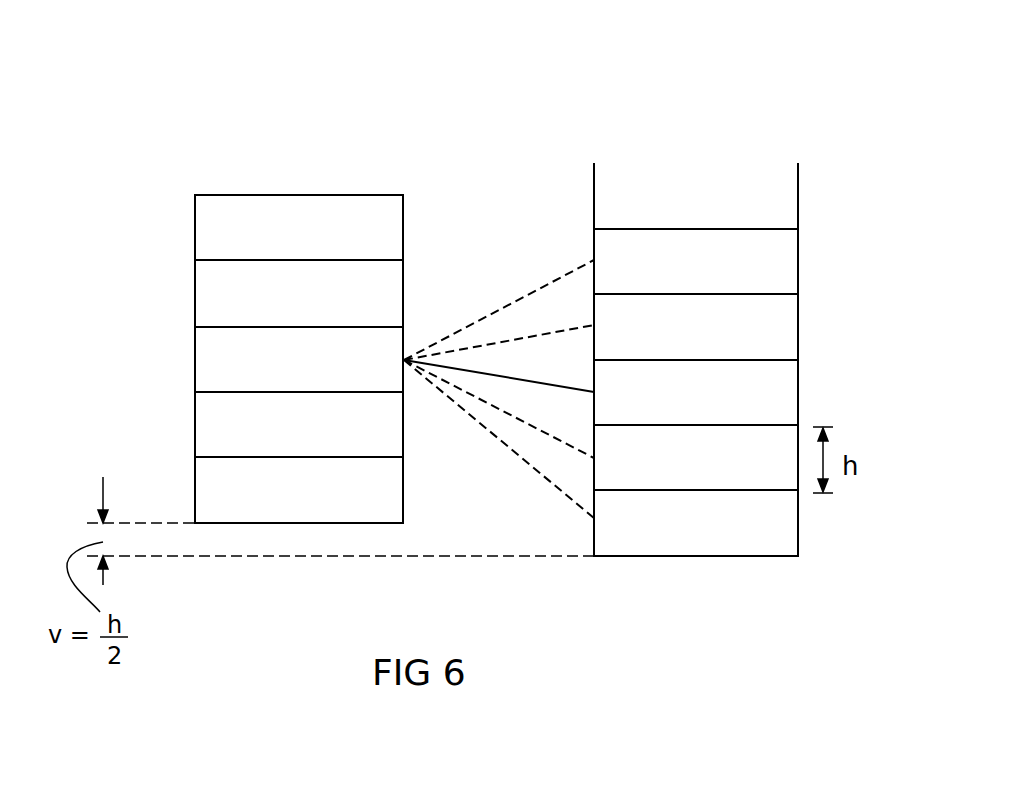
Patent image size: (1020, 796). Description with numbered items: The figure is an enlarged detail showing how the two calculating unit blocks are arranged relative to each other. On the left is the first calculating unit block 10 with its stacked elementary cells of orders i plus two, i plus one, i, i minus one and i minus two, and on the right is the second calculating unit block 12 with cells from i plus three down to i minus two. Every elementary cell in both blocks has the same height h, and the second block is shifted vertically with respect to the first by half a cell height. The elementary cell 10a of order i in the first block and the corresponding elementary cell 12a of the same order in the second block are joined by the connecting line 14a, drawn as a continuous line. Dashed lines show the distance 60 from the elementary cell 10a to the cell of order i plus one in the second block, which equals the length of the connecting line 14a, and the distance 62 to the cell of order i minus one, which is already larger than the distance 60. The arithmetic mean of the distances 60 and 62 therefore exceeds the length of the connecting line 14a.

The first calculating unit block 10 is at (270, 132).
The second calculating unit block 12 is at (685, 118).
The elementary cell 10a is at (195, 360).
The elementary cell 12a is at (800, 393).
The connecting line 14a is at (488, 373).
The distance 60 is at (553, 331).
The distance 62 is at (523, 422).